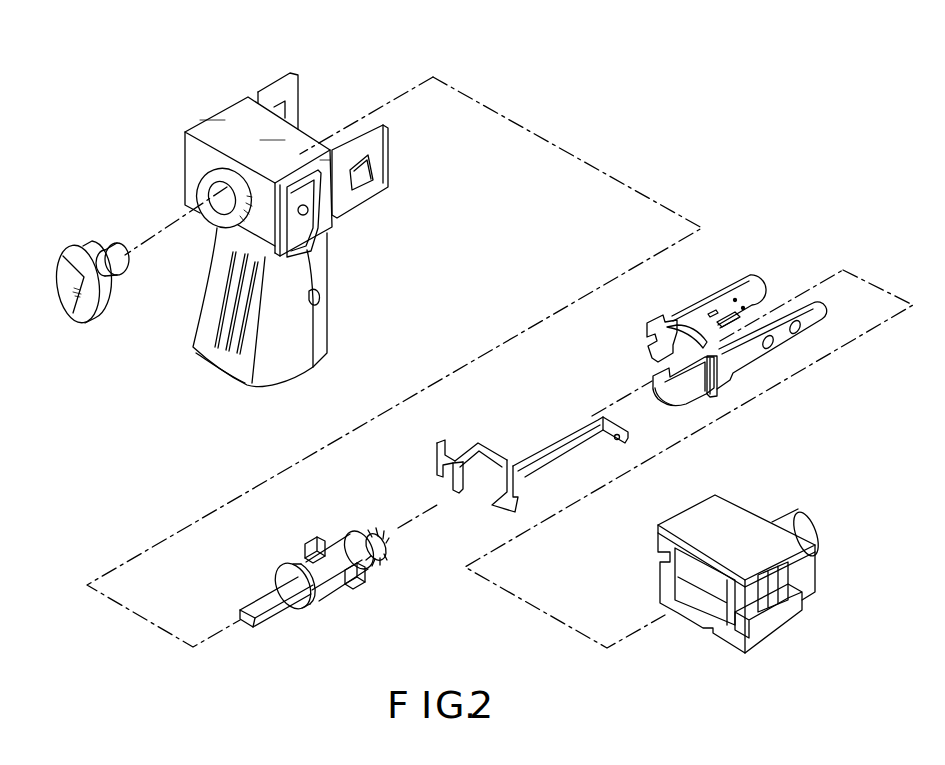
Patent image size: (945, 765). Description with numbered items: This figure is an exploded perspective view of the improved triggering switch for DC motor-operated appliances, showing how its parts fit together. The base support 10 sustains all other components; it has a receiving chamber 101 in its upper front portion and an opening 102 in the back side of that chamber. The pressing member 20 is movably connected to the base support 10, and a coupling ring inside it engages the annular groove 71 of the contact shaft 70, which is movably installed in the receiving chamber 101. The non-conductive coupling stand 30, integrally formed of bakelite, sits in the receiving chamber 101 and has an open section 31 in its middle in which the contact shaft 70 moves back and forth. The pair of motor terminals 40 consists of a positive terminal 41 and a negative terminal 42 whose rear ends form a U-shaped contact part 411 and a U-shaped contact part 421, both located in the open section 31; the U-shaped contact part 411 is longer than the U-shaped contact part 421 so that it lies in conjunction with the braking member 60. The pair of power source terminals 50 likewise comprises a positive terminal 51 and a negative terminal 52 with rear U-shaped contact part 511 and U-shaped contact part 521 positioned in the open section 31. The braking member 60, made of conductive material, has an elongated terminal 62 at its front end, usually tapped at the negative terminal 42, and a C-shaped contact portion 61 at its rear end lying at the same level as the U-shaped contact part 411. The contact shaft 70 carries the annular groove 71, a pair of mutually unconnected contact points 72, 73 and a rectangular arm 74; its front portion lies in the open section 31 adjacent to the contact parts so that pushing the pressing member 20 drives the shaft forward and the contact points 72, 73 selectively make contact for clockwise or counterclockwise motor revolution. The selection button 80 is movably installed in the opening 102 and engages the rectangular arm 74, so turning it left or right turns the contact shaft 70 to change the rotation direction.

The base support 10 is at (327, 280).
The receiving chamber 101 is at (307, 130).
The opening 102 is at (207, 197).
The pressing member 20 is at (282, 380).
The non-conductive coupling stand 30 is at (749, 574).
The open section 31 is at (716, 597).
The motor terminals 40 is at (646, 412).
The positive terminal 41 is at (687, 384).
The U-shaped contact part 411 is at (656, 388).
The negative terminal 42 is at (717, 317).
The U-shaped contact part 421 is at (692, 327).
The power source terminals 50 is at (762, 325).
The positive terminal 51 is at (755, 283).
The U-shaped contact part 511 is at (648, 343).
The negative terminal 52 is at (757, 360).
The U-shaped contact part 521 is at (723, 377).
The braking member 60 is at (529, 494).
The C-shaped contact portion 61 is at (461, 486).
The elongated terminal 62 is at (555, 455).
The contact shaft 70 is at (331, 587).
The annular groove 71 is at (318, 594).
The contact point 72 is at (318, 540).
The contact point 73 is at (348, 600).
The rectangular arm 74 is at (262, 607).
The selection button 80 is at (98, 297).